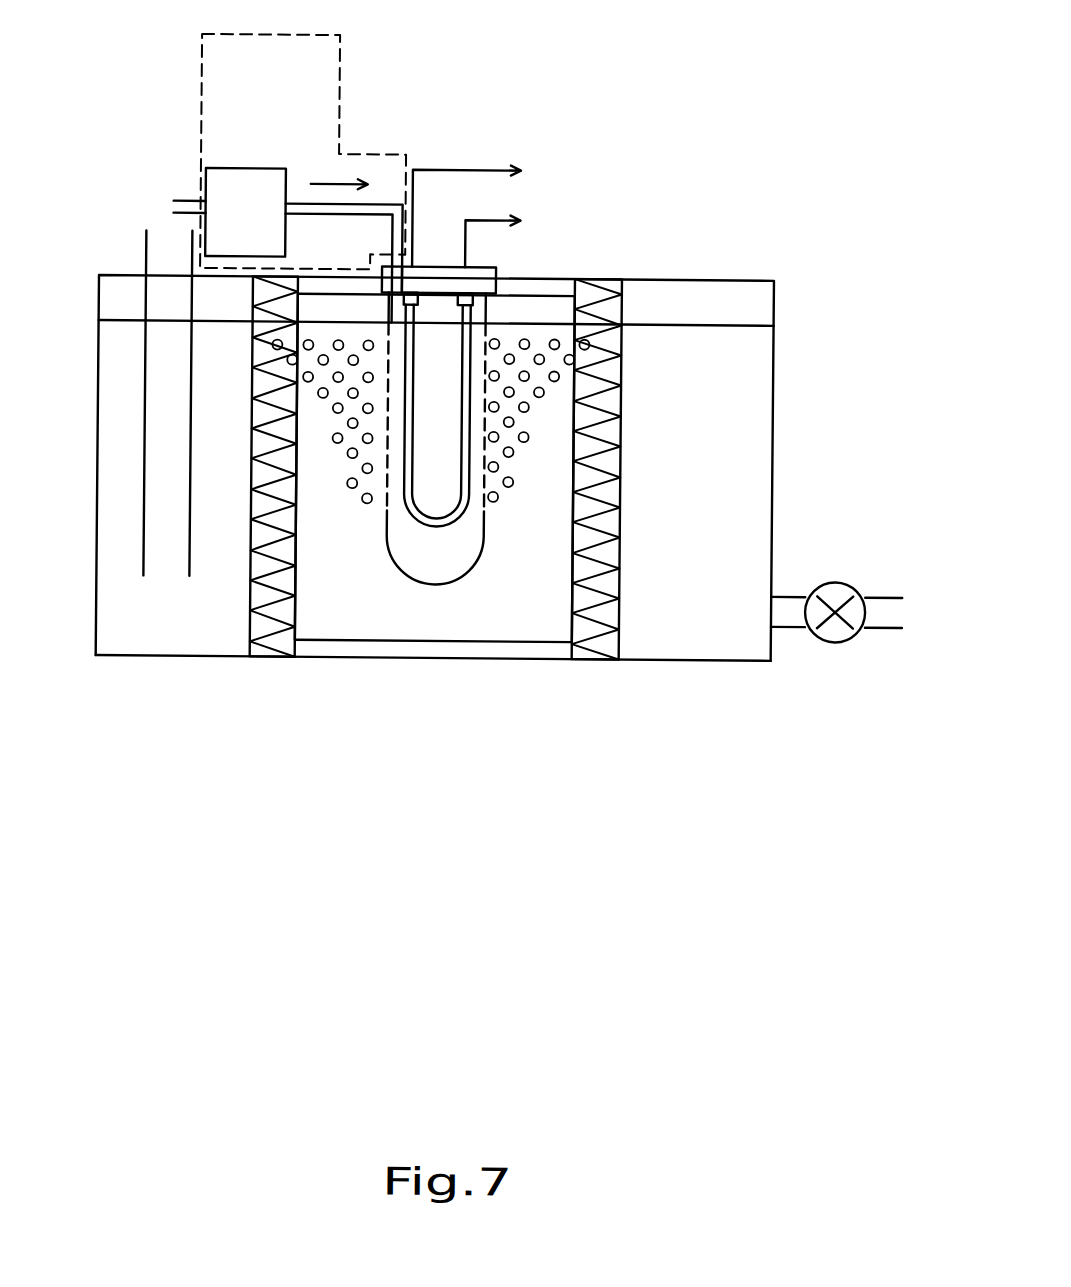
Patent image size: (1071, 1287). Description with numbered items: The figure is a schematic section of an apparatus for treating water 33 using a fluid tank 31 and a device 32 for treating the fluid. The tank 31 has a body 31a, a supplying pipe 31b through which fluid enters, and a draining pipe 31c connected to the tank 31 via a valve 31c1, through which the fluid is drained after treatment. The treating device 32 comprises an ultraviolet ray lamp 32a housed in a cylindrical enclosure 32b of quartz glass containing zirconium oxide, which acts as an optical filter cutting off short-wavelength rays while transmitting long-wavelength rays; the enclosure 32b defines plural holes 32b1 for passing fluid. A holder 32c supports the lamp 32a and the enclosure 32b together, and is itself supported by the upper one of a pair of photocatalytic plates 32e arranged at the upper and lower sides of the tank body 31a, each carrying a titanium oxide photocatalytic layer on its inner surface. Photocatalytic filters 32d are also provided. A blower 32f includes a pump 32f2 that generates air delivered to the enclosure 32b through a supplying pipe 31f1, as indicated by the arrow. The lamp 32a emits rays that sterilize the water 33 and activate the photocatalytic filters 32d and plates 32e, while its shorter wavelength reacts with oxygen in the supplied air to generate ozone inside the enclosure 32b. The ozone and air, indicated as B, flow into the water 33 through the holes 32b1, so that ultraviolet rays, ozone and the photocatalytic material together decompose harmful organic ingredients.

The fluid tank 31 is at (774, 410).
The tank body 31a is at (198, 657).
The supplying pipe 31b is at (146, 253).
The draining pipe 31c is at (891, 587).
The valve 31c1 is at (822, 636).
The gas supply pipe 31f1 is at (372, 202).
The treating device 32 is at (507, 264).
The ultraviolet ray lamp 32a is at (472, 506).
The cylindrical enclosure 32b is at (433, 581).
The holes 32b1 is at (385, 497).
The holder 32c is at (433, 264).
The photocatalytic filters 32d is at (258, 537).
The photocatalytic plates 32e is at (560, 285).
The blower 32f is at (337, 98).
The pump 32f2 is at (243, 167).
The water 33 is at (718, 318).
The ozone and air B is at (525, 436).